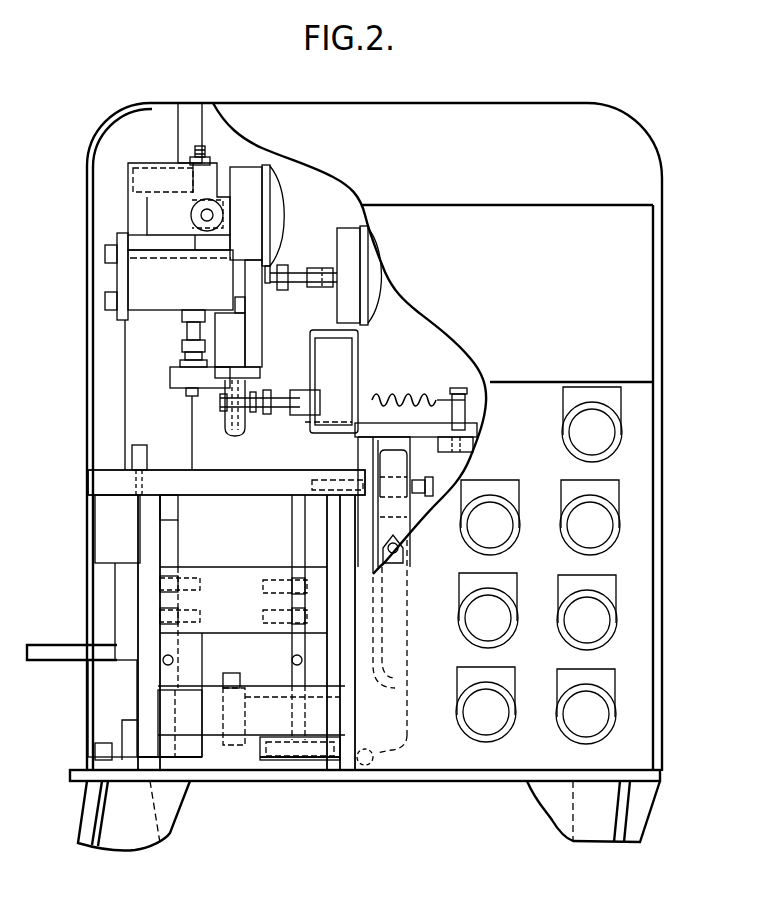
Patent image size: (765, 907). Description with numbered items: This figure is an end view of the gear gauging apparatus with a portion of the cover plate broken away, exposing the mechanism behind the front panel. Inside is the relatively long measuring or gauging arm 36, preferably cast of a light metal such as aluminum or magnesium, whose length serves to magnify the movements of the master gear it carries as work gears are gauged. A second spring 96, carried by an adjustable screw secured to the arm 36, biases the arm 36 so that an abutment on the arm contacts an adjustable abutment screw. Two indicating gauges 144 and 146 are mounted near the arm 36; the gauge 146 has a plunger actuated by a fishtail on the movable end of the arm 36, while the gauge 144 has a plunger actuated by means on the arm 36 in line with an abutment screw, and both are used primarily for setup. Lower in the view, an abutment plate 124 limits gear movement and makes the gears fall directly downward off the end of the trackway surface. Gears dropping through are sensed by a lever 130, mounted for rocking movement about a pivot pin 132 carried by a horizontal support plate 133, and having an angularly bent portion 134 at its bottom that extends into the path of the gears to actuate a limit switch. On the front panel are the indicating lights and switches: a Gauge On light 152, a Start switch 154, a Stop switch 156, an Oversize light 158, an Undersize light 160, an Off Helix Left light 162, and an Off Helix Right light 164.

The gauging arm 36 is at (262, 347).
The second spring 96 is at (409, 388).
The abutment plate 124 is at (241, 567).
The lever 130 is at (433, 616).
The pivot pin 132 is at (441, 478).
The horizontal support plate 133 is at (282, 477).
The angularly bent portion 134 is at (394, 737).
The indicating gauge 144 is at (285, 208).
The indicating gauge 146 is at (373, 270).
The light 152 is at (506, 483).
The switch 154 is at (523, 560).
The switch 156 is at (520, 677).
The light 158 is at (565, 407).
The light 160 is at (584, 481).
The light 162 is at (588, 574).
The light 164 is at (607, 672).